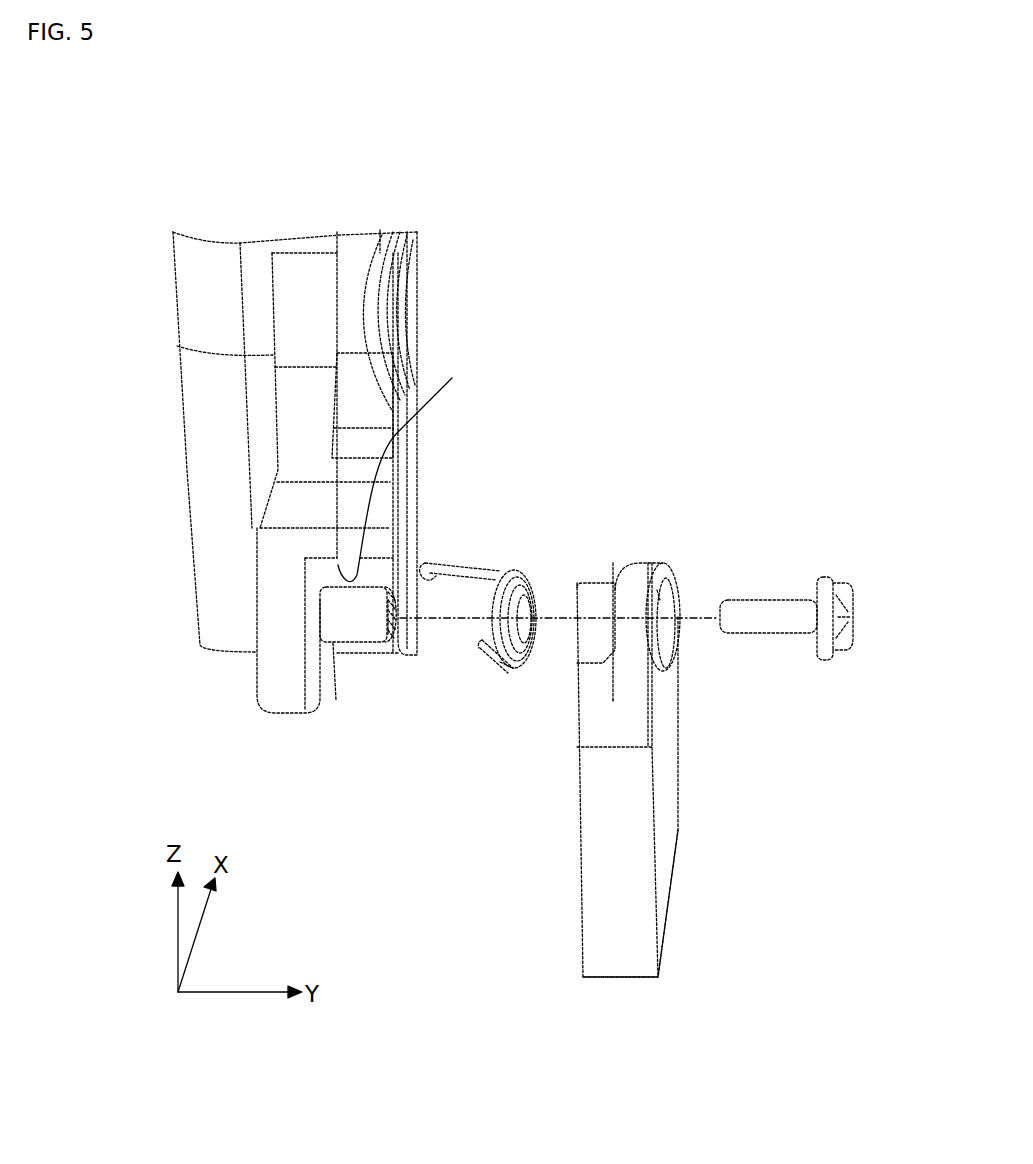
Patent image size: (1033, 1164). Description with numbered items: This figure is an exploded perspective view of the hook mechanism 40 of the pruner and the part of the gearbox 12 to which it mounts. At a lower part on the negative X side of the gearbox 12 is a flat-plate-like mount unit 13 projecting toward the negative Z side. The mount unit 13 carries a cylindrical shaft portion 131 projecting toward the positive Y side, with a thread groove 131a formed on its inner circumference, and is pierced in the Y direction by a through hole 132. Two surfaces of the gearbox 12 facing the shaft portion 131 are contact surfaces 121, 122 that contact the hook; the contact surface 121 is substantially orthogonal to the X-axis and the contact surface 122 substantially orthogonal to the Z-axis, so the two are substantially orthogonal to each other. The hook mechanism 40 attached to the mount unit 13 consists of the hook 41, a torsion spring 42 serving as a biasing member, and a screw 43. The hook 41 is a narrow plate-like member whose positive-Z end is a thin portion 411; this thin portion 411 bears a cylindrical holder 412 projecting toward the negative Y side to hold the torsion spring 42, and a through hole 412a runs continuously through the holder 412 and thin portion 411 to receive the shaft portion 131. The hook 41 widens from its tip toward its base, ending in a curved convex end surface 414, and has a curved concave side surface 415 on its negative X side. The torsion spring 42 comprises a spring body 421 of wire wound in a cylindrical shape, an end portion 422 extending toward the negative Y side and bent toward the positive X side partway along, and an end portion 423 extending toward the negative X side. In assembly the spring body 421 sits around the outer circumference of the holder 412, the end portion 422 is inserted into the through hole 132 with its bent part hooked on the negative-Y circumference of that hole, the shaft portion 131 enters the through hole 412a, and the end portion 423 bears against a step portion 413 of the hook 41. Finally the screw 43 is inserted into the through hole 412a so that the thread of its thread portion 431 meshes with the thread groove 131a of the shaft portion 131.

The gearbox 12 is at (185, 438).
The mount unit 13 is at (273, 713).
The hook mechanism 40 is at (711, 463).
The hook 41 is at (638, 715).
The torsion spring 42 is at (487, 647).
The screw 43 is at (796, 573).
The contact surface 121 is at (383, 560).
The contact surface 122 is at (417, 475).
The shaft portion 131 is at (337, 697).
The thread groove 131a is at (385, 628).
The through hole 132 is at (308, 566).
The thin portion 411 is at (648, 563).
The holder 412 is at (593, 583).
The through hole 412a is at (665, 601).
The step portion 413 is at (612, 643).
The curved convex end surface 414 is at (670, 920).
The curved concave side surface 415 is at (615, 862).
The spring body 421 is at (483, 640).
The end portion 422 is at (467, 560).
The end portion 423 is at (507, 668).
The thread portion 431 is at (782, 600).